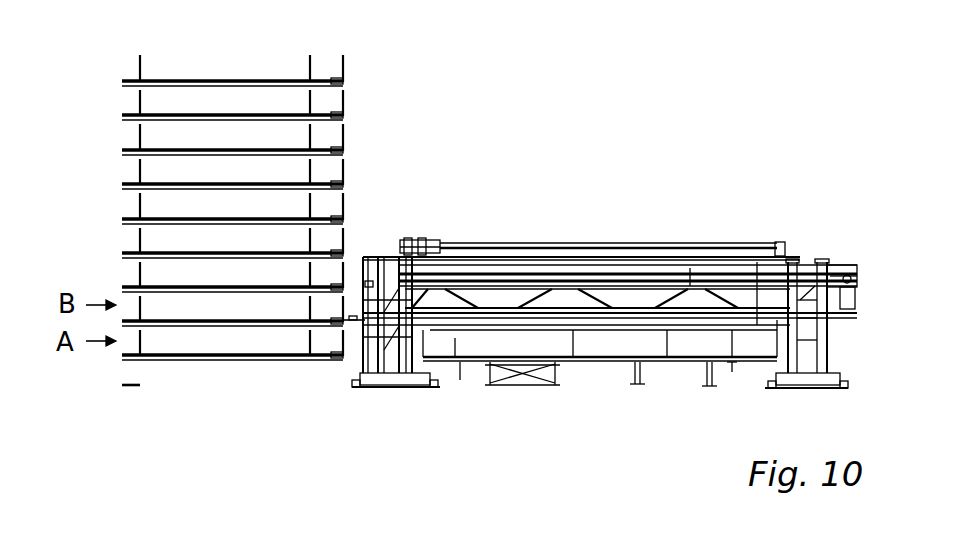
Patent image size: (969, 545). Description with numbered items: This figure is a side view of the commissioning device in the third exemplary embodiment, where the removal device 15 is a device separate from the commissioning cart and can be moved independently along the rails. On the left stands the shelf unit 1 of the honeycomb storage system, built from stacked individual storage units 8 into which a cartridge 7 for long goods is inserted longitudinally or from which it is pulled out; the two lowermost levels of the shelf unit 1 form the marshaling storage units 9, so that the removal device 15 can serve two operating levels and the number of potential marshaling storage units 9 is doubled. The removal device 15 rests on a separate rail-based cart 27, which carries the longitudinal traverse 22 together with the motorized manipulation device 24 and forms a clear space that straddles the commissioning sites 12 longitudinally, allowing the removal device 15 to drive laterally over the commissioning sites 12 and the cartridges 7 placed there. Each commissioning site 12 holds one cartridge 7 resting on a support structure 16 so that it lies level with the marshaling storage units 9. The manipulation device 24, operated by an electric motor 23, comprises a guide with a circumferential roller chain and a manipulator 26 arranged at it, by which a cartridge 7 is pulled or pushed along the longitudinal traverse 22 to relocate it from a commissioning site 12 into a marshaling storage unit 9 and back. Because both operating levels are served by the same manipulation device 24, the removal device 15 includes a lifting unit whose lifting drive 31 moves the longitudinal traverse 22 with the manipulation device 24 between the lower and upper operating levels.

The shelf unit 1 is at (378, 78).
The cartridge 7 is at (453, 362).
The storage unit 8 is at (330, 137).
The marshaling storage unit 9 is at (211, 303).
The commissioning site 12 is at (591, 345).
The removal device 15 is at (590, 258).
The support structure 16 is at (521, 380).
The longitudinal traverse 22 is at (801, 268).
The electric motor 23 is at (862, 292).
The manipulation device 24 is at (663, 282).
The manipulator 26 is at (388, 257).
The rail-based cart 27 is at (386, 378).
The lifting drive 31 is at (411, 257).